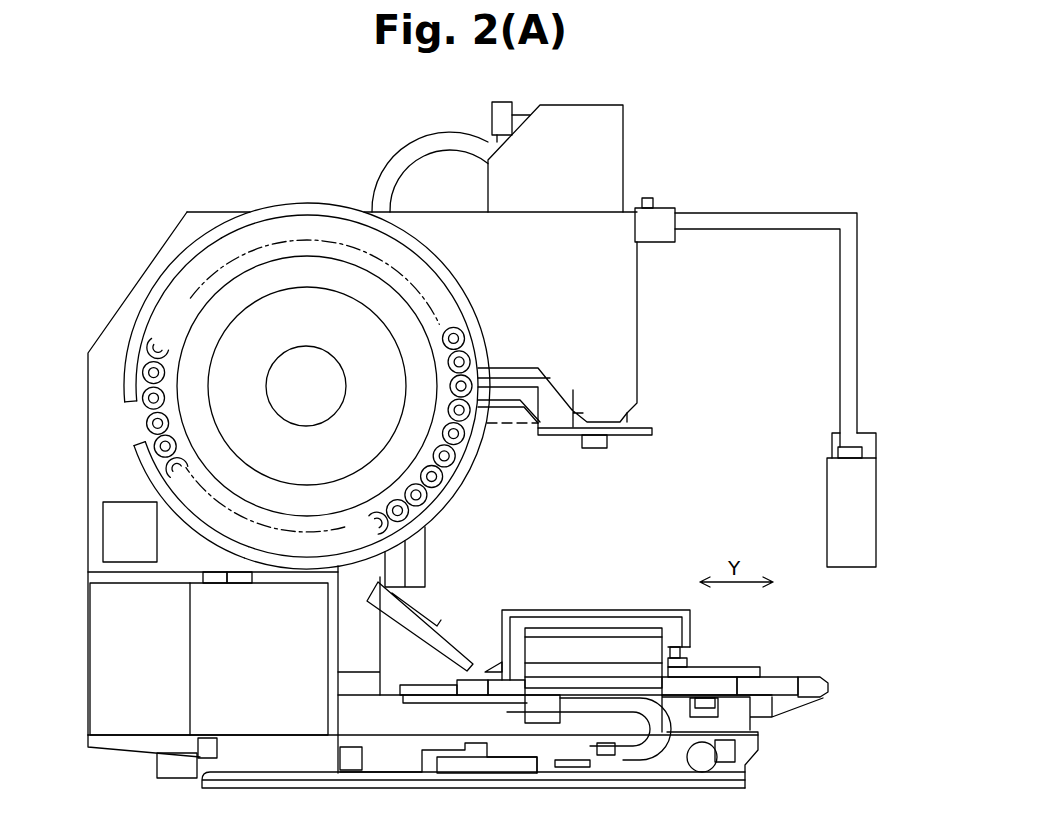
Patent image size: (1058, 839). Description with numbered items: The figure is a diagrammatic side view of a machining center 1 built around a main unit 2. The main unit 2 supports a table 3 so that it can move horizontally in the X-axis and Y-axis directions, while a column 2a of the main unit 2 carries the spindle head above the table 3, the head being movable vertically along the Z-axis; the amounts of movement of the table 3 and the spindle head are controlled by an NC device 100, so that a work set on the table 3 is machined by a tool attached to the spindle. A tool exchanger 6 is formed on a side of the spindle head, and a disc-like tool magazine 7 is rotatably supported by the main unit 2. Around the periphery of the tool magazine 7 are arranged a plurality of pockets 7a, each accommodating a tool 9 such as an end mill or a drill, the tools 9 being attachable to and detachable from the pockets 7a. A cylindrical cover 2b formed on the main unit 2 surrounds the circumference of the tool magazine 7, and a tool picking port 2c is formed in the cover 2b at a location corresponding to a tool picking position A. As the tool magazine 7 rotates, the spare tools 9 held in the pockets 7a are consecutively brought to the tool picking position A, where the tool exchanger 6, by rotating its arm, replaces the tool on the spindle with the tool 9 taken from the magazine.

The machining center 1 is at (728, 132).
The main unit 2 is at (387, 760).
The column 2a is at (209, 222).
The cylindrical cover 2b is at (130, 328).
The tool picking port 2c is at (132, 445).
The table 3 is at (633, 628).
The tool exchanger 6 is at (655, 430).
The tool magazine 7 is at (300, 270).
The pockets 7a is at (463, 330).
The tools 9 is at (458, 460).
The NC device 100 is at (830, 490).
The tool picking position A is at (121, 427).